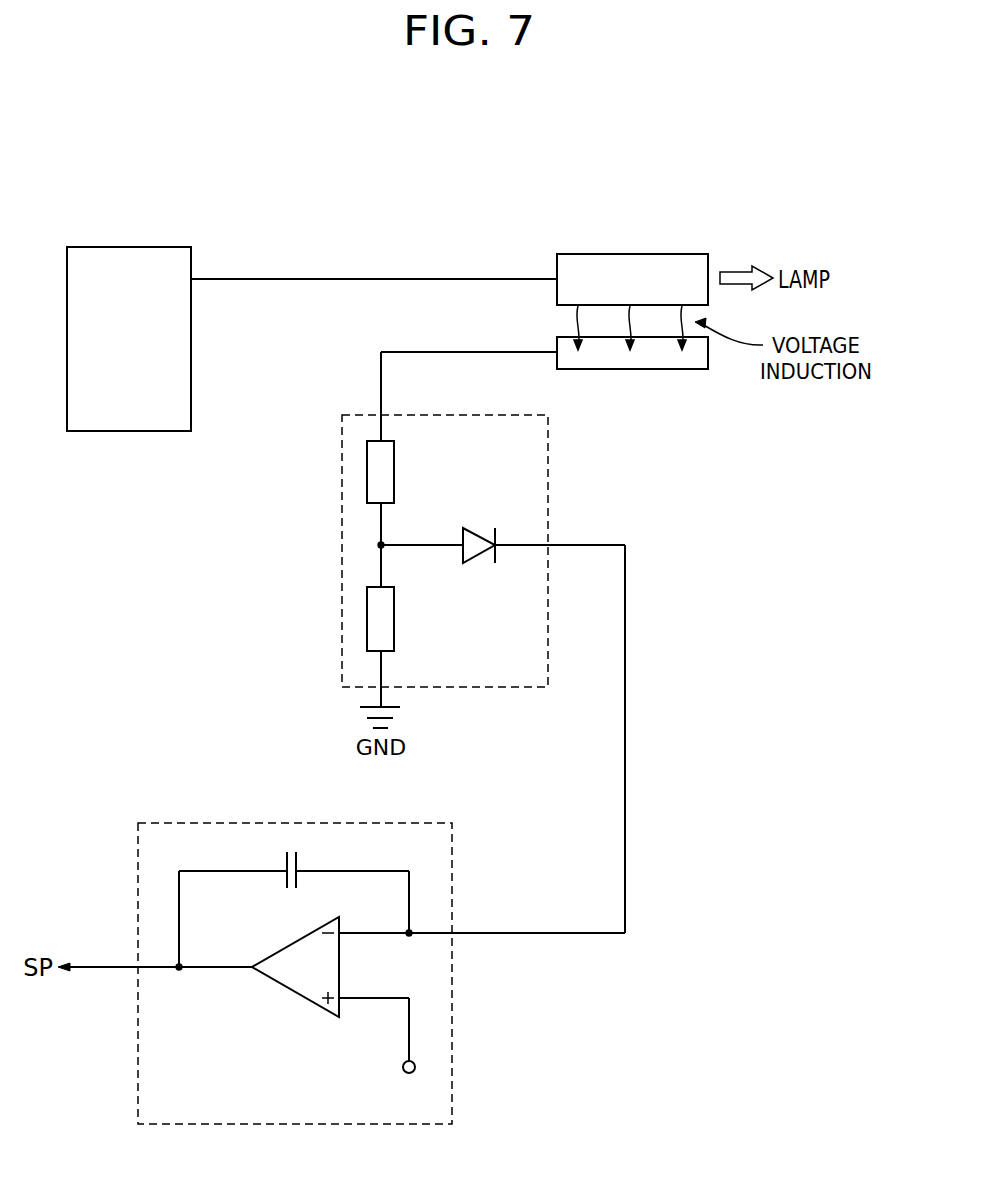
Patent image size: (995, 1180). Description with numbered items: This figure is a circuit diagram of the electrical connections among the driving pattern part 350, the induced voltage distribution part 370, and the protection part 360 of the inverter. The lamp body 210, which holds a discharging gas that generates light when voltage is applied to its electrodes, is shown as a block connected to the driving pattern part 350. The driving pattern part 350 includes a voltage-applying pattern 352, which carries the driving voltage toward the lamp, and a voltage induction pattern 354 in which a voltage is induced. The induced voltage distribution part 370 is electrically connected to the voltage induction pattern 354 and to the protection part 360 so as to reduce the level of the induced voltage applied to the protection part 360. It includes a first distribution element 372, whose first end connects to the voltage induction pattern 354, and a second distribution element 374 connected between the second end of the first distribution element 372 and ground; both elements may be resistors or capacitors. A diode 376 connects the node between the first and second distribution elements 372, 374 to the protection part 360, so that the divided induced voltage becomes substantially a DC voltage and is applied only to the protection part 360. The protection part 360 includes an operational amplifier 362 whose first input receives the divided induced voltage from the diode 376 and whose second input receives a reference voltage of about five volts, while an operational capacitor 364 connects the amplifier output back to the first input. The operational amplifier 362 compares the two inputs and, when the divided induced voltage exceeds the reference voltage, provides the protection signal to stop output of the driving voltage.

The lamp body 210 is at (128, 247).
The driving pattern part 350 is at (632, 256).
The voltage-applying pattern 352 is at (590, 254).
The voltage induction pattern 354 is at (655, 348).
The induced voltage distribution part 370 is at (451, 561).
The first distribution element 372 is at (367, 470).
The second distribution element 374 is at (367, 617).
The diode 376 is at (478, 528).
The protection part 360 is at (299, 944).
The operational amplifier 362 is at (288, 997).
The operational capacitor 364 is at (288, 844).